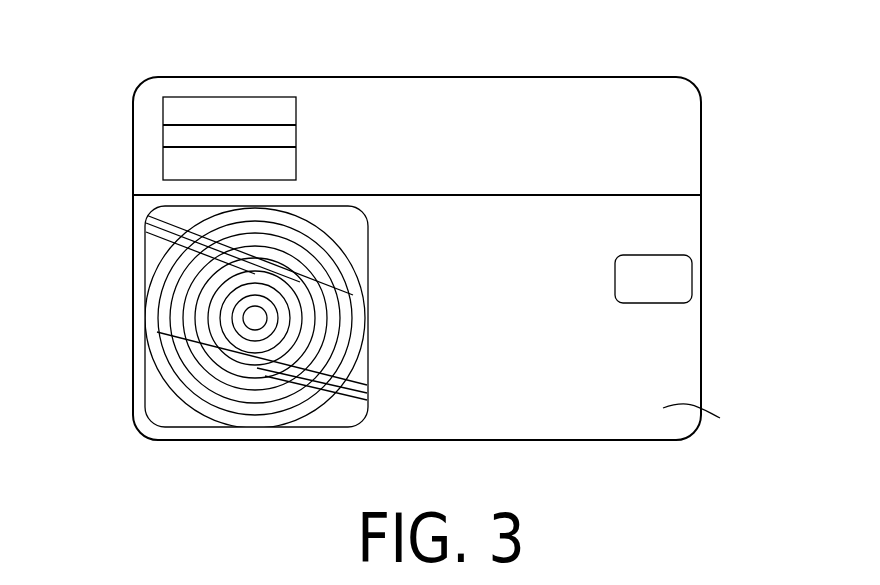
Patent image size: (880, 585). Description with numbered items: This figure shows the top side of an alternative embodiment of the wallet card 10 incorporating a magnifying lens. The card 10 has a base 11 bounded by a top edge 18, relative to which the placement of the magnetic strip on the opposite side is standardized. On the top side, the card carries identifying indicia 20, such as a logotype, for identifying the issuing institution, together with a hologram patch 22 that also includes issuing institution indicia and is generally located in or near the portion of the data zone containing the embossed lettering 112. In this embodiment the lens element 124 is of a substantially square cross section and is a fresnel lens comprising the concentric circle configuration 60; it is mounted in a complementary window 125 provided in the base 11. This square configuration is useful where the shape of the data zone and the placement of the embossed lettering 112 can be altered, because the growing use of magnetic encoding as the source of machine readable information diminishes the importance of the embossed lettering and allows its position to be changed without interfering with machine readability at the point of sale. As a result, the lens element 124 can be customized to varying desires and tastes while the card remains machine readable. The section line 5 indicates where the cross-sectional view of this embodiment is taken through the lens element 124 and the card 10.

The card 10 is at (660, 68).
The base 11 is at (716, 421).
The top edge 18 is at (535, 77).
The identifying indicia 20 is at (177, 97).
The hologram patch 22 is at (658, 253).
The concentric circle configuration 60 is at (183, 372).
The embossed lettering 112 is at (658, 363).
The lens element 124 is at (330, 412).
The window 125 is at (128, 257).
The section line 5 is at (257, 60).